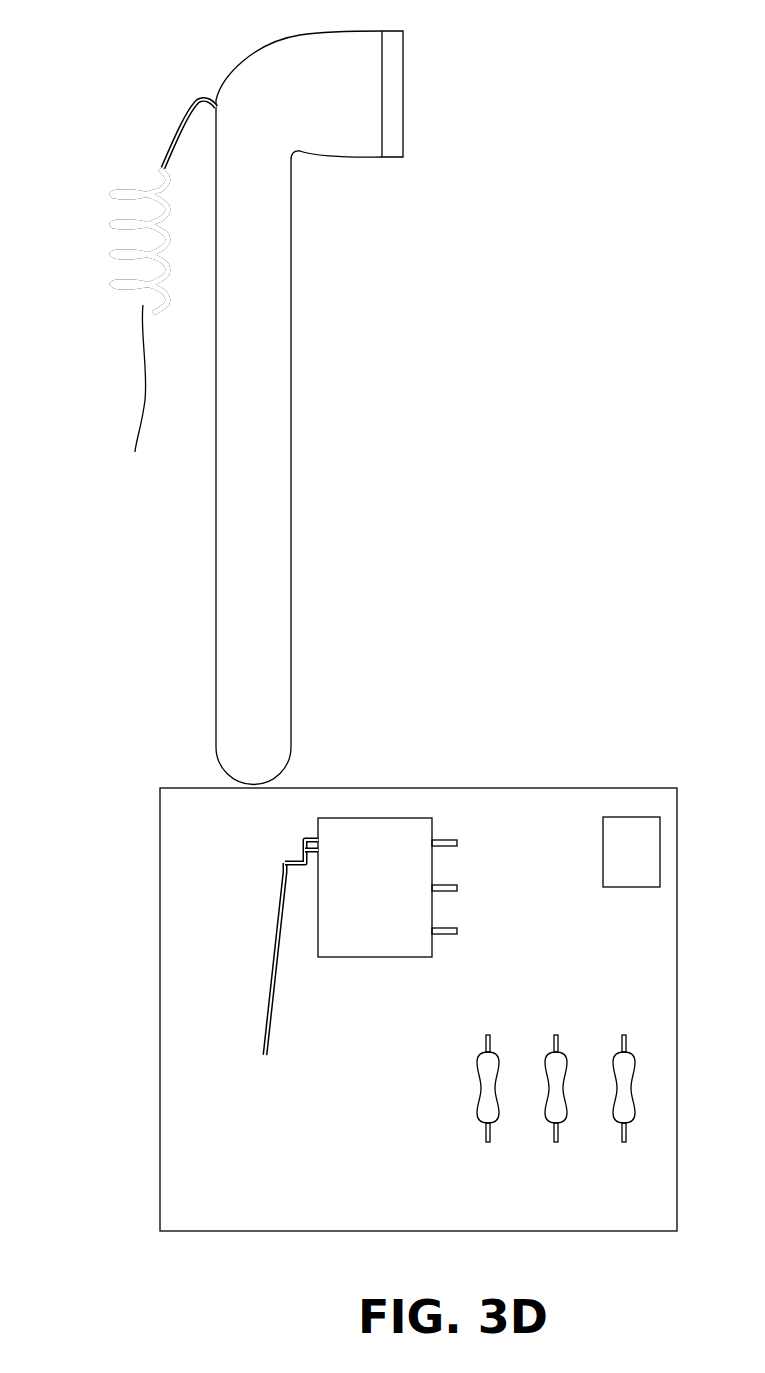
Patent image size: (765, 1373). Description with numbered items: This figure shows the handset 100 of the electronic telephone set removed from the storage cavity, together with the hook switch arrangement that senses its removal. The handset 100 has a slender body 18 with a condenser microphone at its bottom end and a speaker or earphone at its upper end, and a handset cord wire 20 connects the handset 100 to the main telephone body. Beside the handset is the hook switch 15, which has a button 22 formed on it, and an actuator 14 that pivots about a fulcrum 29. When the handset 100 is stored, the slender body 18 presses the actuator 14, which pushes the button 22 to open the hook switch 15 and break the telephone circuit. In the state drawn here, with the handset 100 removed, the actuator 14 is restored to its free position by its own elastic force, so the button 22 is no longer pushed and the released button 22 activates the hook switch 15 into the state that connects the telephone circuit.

The handset 100 is at (297, 75).
The slender body 18 is at (263, 621).
The handset cord wire 20 is at (164, 294).
The hook switch 15 is at (400, 830).
The actuator 14 is at (273, 990).
The button 22 is at (313, 852).
The fulcrum 29 is at (312, 840).